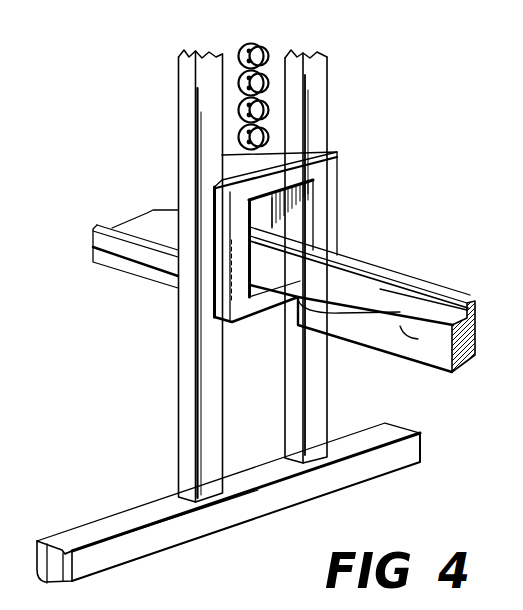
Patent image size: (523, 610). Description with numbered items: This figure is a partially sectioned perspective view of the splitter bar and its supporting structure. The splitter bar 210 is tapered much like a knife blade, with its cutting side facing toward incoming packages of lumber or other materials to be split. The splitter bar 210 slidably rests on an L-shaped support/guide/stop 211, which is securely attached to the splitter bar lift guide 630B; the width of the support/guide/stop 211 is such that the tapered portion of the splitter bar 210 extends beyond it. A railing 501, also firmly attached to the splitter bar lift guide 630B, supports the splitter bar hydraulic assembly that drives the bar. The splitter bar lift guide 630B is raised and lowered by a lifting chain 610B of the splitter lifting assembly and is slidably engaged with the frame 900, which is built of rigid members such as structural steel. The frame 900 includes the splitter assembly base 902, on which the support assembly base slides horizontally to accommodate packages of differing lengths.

The splitter bar 210 is at (320, 248).
The support/guide/stop 211 is at (405, 333).
The railing 501 is at (93, 254).
The lifting chain 610B is at (251, 42).
The splitter bar lift guide 630B is at (328, 187).
The frame 900 is at (180, 354).
The splitter assembly base 902 is at (135, 516).